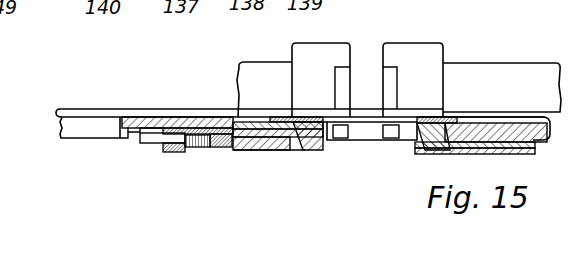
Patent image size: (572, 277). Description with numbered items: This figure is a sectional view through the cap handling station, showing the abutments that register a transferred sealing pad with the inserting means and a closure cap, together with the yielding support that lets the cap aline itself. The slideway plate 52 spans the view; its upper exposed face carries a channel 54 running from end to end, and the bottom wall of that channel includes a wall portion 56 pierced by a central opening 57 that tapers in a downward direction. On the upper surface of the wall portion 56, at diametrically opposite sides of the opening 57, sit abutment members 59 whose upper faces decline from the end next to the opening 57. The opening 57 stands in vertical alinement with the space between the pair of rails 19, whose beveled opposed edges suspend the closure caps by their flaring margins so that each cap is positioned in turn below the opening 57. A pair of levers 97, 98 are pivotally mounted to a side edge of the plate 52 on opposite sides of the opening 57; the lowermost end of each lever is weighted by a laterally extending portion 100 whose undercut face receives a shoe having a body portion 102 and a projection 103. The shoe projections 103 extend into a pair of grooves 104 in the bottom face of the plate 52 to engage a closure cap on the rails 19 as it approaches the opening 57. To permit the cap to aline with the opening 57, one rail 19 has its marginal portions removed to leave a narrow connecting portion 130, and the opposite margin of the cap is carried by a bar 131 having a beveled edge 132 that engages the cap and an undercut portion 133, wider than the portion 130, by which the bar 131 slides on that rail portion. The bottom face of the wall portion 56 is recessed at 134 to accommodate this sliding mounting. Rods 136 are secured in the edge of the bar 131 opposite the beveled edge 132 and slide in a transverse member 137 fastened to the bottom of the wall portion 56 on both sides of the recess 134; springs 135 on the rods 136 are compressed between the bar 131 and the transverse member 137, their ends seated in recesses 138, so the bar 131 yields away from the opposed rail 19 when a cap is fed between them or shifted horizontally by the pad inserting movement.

The channel 54 is at (107, 117).
The plate 52 is at (98, 127).
The recess 134 is at (133, 135).
The wall portion 56 is at (152, 118).
The bar 131 is at (230, 118).
The rods 136 is at (151, 143).
The transverse member 137 is at (176, 152).
The recesses 138 is at (190, 148).
The springs 135 is at (198, 150).
The narrow connecting portion 130 is at (268, 152).
The undercut portion 133 is at (293, 152).
The beveled edge 132 is at (326, 148).
The abutment members 59 is at (312, 117).
The projection 103 is at (345, 143).
The grooves 104 is at (336, 142).
The opening 57 is at (423, 123).
The rails 19 is at (442, 148).
The lever 97 is at (260, 67).
The weighted portion 100 is at (317, 43).
The shoe body portion 102 is at (347, 77).
The lever 98 is at (538, 63).